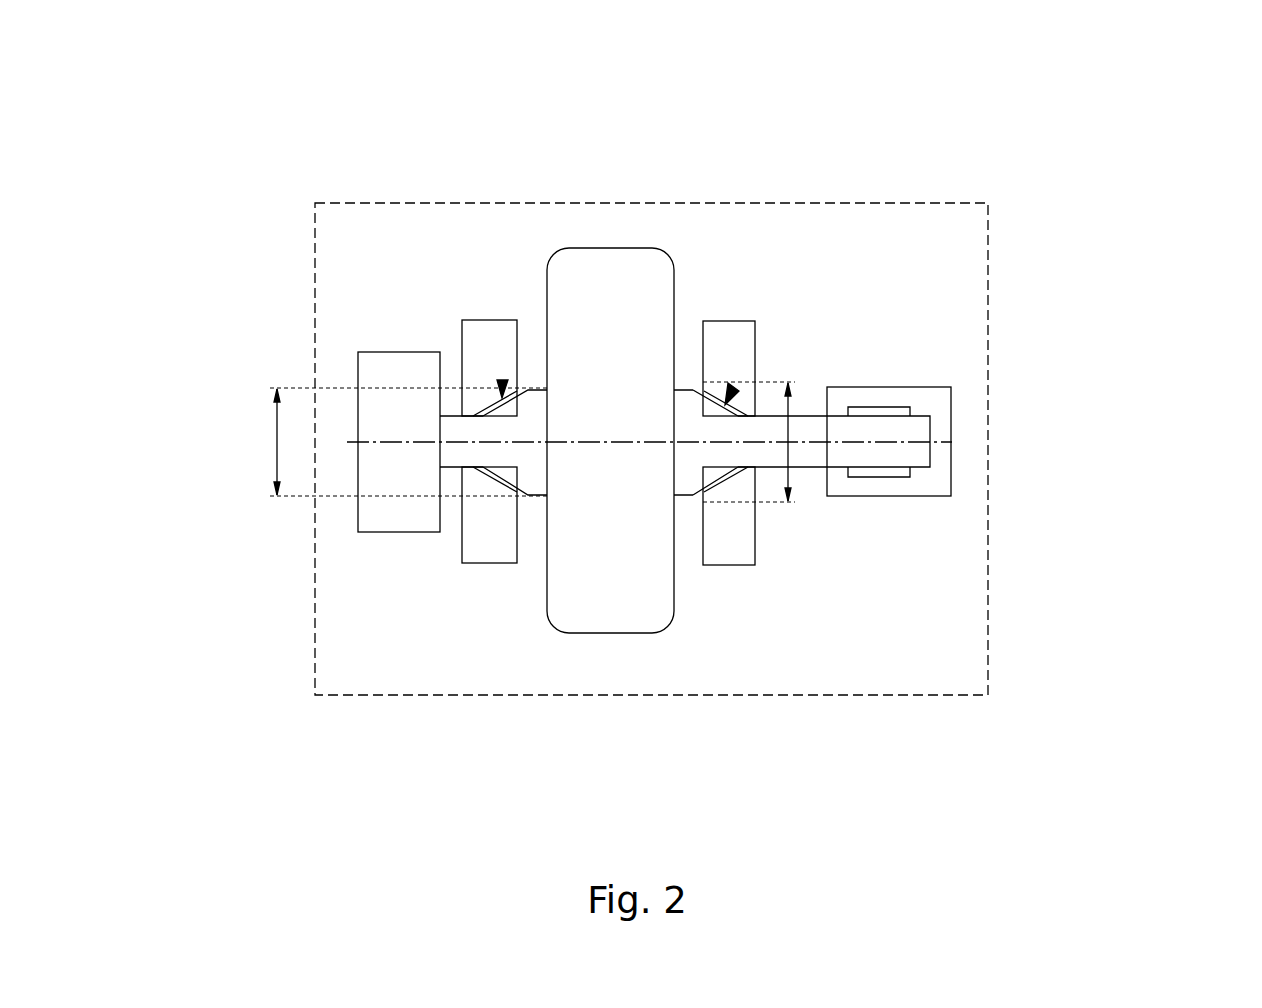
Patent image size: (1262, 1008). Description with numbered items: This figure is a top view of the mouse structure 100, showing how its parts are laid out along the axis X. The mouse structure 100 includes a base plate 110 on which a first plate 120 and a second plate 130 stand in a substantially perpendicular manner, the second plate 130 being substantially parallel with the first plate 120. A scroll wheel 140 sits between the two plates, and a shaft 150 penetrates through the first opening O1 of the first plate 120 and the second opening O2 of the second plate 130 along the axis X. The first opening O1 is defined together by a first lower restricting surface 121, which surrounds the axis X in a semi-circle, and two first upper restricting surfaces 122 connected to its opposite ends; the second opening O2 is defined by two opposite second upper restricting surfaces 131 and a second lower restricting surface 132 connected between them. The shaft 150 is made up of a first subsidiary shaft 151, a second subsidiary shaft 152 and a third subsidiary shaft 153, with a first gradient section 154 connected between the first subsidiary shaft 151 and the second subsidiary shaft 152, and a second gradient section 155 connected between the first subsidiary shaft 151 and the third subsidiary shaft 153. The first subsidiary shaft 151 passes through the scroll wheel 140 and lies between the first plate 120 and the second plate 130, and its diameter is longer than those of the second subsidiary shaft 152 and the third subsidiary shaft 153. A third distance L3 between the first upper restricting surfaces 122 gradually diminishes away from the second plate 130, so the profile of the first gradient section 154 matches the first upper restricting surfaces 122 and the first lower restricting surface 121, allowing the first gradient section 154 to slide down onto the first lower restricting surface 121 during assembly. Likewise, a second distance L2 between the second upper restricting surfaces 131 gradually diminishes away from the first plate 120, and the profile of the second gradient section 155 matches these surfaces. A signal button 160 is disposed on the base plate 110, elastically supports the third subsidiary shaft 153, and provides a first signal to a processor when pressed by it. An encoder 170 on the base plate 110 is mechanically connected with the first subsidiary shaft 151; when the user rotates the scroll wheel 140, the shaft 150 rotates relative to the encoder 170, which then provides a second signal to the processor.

The mouse structure 100 is at (16, 80).
The base plate 110 is at (850, 212).
The first plate 120 is at (493, 531).
The first lower restricting surface 121 is at (517, 490).
The first upper restricting surfaces 122 is at (502, 487).
The second plate 130 is at (754, 360).
The second upper restricting surfaces 131 is at (713, 482).
The second lower restricting surface 132 is at (732, 478).
The scroll wheel 140 is at (613, 260).
The shaft 150 is at (834, 291).
The first subsidiary shaft 151 is at (535, 400).
The second subsidiary shaft 152 is at (448, 418).
The third subsidiary shaft 153 is at (927, 432).
The first gradient section 154 is at (502, 463).
The second gradient section 155 is at (713, 425).
The signal button 160 is at (940, 398).
The encoder 170 is at (367, 517).
The first opening O1 is at (501, 382).
The second opening O2 is at (733, 386).
The second distance L2 is at (792, 433).
The third distance L3 is at (390, 442).
The axis X is at (953, 442).